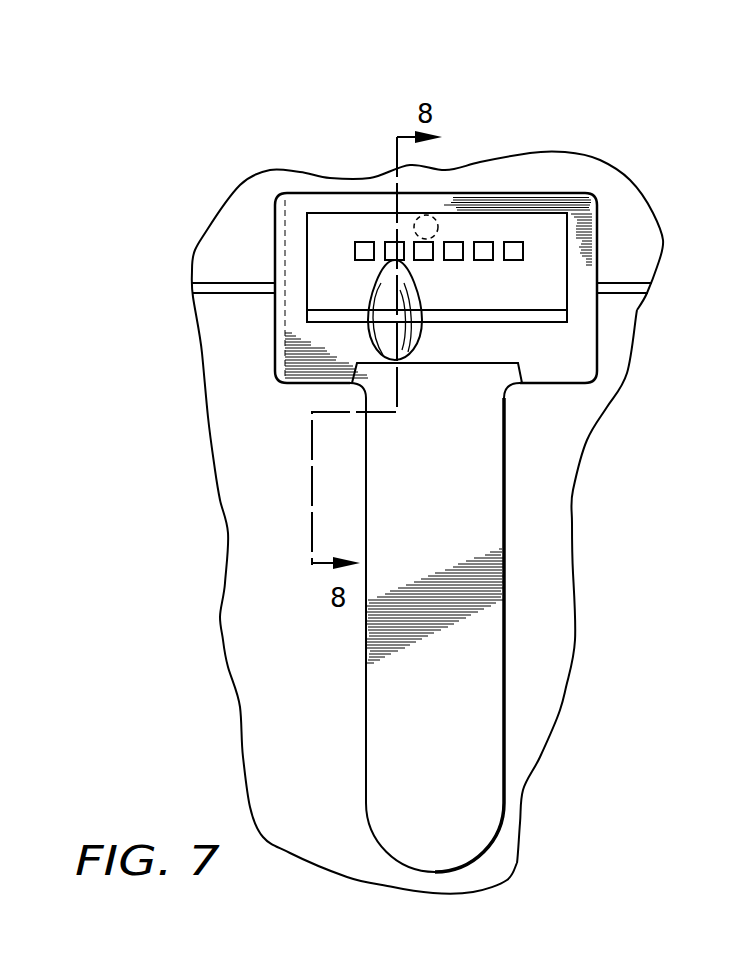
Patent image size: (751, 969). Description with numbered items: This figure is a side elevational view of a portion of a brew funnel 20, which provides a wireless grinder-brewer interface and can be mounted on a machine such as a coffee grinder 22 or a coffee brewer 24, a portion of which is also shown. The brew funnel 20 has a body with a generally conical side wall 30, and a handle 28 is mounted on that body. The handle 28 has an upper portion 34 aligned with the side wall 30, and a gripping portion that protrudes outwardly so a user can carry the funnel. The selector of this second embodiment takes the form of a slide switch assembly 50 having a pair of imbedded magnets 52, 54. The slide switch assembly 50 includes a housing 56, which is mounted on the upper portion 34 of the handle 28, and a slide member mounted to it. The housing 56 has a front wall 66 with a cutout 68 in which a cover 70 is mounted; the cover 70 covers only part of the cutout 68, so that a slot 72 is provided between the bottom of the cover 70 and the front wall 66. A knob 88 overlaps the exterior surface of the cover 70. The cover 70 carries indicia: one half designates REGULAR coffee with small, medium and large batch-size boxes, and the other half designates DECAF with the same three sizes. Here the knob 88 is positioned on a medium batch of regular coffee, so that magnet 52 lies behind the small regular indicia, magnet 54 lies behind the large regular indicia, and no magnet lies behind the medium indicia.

The brew funnel 20 is at (427, 522).
The coffee grinder 22 is at (410, 470).
The coffee brewer 24 is at (410, 470).
The handle 28 is at (397, 665).
The side wall 30 is at (543, 577).
The upper portion 34 is at (600, 272).
The slide switch assembly 50 is at (607, 190).
The magnet 52 is at (365, 215).
The magnet 54 is at (427, 214).
The housing 56 is at (275, 330).
The front wall 66 is at (575, 342).
The cutout 68 is at (598, 247).
The cover 70 is at (548, 220).
The slot 72 is at (527, 315).
The knob 88 is at (408, 340).